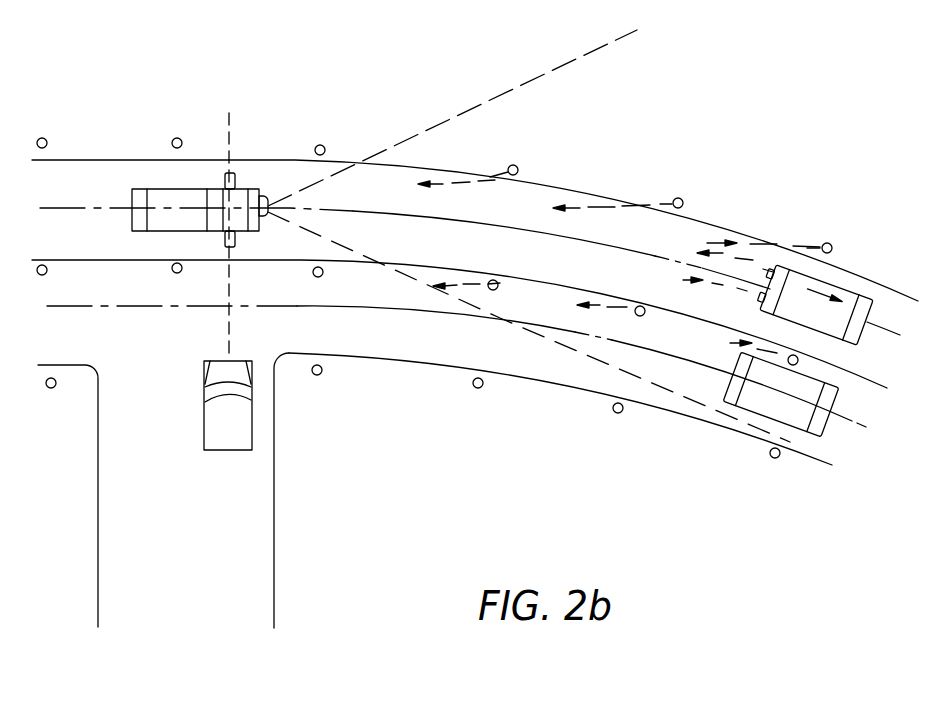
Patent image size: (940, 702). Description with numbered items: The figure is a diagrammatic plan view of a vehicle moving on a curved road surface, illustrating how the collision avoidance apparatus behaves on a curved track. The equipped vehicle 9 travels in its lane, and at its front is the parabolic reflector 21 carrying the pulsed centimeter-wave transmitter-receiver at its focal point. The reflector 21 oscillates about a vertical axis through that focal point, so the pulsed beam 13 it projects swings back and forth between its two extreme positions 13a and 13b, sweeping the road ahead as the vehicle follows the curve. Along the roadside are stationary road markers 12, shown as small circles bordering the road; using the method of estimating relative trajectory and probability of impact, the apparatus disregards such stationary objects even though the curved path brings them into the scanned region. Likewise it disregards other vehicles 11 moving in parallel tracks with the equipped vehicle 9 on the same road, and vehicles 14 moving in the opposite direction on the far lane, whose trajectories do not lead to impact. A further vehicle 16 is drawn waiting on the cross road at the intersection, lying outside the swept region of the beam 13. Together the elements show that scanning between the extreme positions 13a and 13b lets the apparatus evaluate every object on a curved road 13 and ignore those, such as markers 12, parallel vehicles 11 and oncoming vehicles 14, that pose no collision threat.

The vehicle equipped with the system 9 is at (90, 175).
The parabolic reflector 21 is at (259, 192).
The extreme beam position 13a is at (422, 128).
The extreme beam position 13b is at (393, 267).
The road markers 12 is at (516, 165).
The pulsed beam 13 is at (786, 159).
The other vehicles 11 is at (837, 330).
The vehicles moving in opposite direction 14 is at (758, 400).
The vehicle on cross road 16 is at (233, 432).